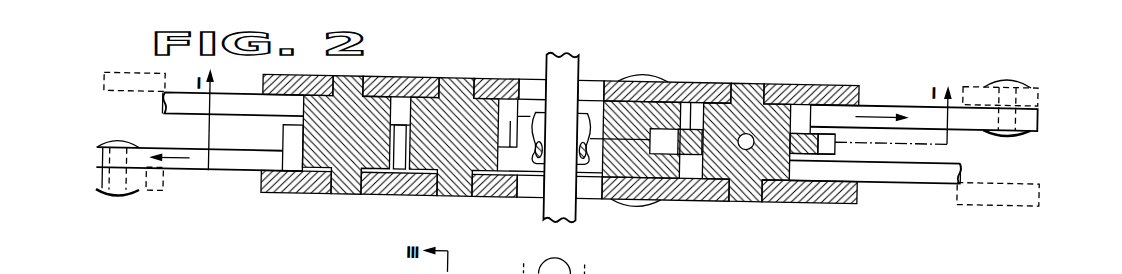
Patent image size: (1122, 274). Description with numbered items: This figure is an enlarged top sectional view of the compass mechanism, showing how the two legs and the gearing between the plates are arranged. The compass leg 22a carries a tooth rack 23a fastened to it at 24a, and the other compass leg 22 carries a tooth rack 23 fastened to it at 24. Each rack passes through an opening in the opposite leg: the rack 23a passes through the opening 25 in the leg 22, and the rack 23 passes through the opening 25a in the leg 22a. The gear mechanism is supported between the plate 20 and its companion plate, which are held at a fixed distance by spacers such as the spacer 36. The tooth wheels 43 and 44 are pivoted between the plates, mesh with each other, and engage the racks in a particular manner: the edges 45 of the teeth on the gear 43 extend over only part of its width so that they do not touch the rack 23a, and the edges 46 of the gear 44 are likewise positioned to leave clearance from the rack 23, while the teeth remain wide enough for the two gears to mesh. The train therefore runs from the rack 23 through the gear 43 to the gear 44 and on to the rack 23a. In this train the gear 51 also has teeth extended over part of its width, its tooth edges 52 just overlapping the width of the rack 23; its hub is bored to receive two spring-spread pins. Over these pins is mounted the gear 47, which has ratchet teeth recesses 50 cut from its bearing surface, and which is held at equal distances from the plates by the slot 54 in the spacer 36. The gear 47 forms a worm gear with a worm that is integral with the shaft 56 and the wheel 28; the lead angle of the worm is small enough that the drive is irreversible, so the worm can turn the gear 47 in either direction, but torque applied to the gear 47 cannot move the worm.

The plate 20 is at (842, 195).
The compass leg 22 is at (1037, 89).
The compass leg 22a is at (112, 100).
The tooth rack 23 is at (238, 113).
The tooth rack 23a is at (200, 175).
The fastening point 24 is at (1017, 73).
The fastening point 24a is at (118, 202).
The opening 25 is at (1002, 167).
The opening 25a is at (150, 120).
The wheel 28 is at (577, 210).
The spacer 36 is at (645, 95).
The tooth wheel 43 is at (422, 198).
The tooth wheel 44 is at (327, 166).
The tooth edges 45 is at (397, 125).
The tooth edges 46 is at (299, 140).
The gear 47 is at (830, 143).
The ratchet teeth recesses 50 is at (718, 100).
The gear 51 is at (777, 163).
The tooth edges 52 is at (688, 100).
The slot 54 is at (653, 171).
The shaft 56 is at (580, 117).